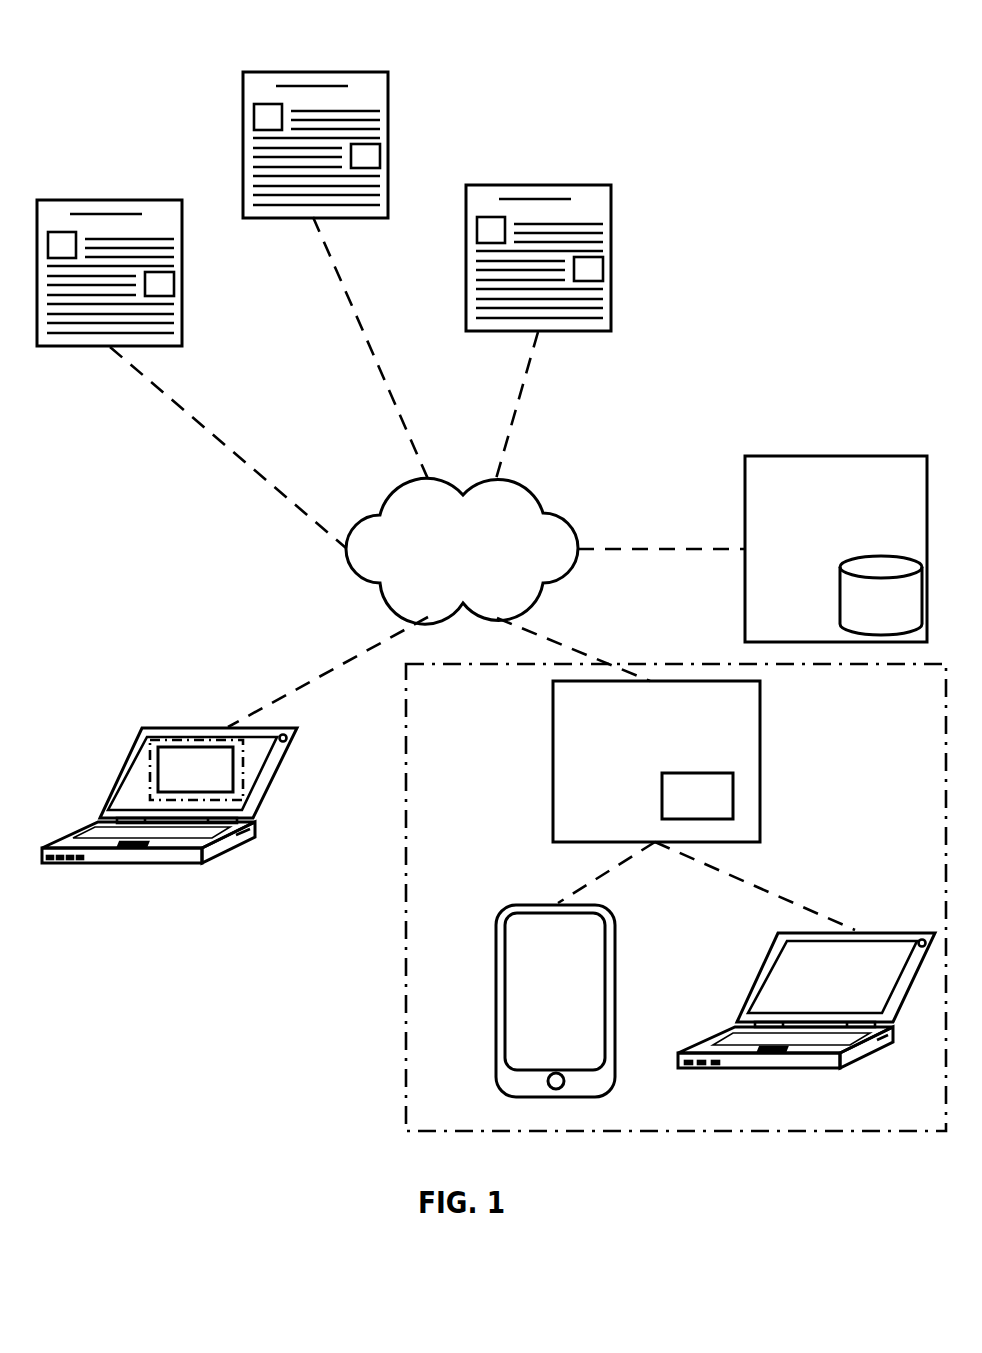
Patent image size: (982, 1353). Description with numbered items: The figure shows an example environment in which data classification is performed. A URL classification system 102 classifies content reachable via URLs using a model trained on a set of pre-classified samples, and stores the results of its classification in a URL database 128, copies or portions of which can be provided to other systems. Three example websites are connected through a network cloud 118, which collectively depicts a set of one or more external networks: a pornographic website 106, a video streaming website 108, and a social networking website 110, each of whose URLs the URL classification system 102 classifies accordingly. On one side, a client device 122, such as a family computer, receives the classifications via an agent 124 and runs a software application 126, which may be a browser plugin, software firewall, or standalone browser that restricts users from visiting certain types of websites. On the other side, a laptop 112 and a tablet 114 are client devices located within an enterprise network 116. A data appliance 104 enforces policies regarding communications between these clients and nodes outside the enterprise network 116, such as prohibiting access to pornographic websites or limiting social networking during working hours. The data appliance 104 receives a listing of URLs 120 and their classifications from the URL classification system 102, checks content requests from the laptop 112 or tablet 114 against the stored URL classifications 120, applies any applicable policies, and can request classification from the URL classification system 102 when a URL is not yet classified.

The URL classification system 102 is at (838, 456).
The data appliance 104 is at (760, 761).
The pornographic website 106 is at (541, 185).
The video streaming website 108 is at (317, 72).
The social networking website 110 is at (112, 200).
The laptop 112 is at (860, 933).
The tablet 114 is at (496, 998).
The enterprise network 116 is at (655, 664).
The network cloud 118 is at (537, 497).
The listing of URLs 120 is at (733, 795).
The client device 122 is at (108, 792).
The agent 124 is at (197, 750).
The software application 126 is at (150, 778).
The URL database 128 is at (840, 597).